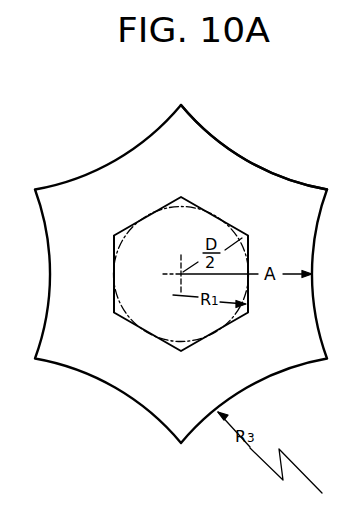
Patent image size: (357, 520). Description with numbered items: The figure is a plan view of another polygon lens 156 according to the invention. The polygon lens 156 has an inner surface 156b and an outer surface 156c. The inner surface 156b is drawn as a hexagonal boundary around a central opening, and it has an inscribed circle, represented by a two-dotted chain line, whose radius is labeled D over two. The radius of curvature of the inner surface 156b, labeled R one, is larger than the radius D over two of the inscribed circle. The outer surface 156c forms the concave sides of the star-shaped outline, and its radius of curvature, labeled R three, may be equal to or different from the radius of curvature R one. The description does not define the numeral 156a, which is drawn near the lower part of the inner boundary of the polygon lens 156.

The polygon lens 156 is at (118, 153).
The central hexagonal opening 156a is at (153, 320).
The inner surface 156b is at (148, 214).
The outer surface 156c is at (258, 166).